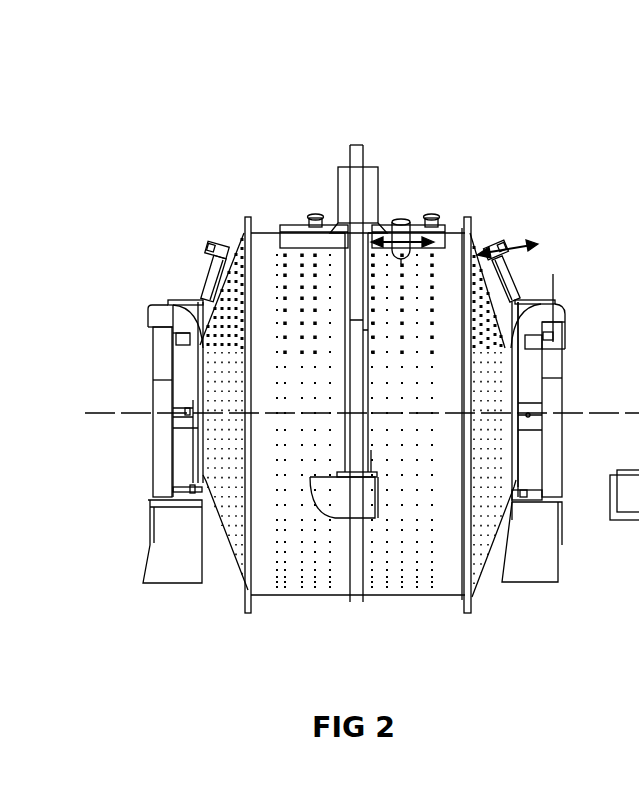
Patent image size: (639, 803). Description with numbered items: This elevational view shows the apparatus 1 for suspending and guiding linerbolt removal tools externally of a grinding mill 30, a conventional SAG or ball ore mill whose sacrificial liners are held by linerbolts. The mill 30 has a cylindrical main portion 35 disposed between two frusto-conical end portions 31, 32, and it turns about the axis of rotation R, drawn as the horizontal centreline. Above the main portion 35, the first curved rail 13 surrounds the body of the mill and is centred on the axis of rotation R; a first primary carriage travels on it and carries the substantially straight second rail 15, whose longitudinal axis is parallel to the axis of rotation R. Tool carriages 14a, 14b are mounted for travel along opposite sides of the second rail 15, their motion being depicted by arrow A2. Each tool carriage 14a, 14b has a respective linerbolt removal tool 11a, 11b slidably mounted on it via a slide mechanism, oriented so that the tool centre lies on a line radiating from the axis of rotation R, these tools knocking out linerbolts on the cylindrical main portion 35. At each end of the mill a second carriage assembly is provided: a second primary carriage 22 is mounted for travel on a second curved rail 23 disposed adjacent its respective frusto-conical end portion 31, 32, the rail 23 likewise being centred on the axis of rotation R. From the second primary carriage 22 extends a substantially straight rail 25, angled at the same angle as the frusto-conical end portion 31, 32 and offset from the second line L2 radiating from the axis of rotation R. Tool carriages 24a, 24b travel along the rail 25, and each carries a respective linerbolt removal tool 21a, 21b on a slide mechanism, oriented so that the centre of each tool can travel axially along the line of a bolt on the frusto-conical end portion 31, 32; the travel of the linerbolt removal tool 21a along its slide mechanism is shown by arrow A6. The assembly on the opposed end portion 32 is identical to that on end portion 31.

The apparatus 1 is at (203, 109).
The first curved rail 13 is at (355, 145).
The tool carriage 14a is at (435, 187).
The linerbolt removal tool 11a is at (401, 219).
The tool carriage 14b is at (298, 169).
The linerbolt removal tool 11b is at (313, 214).
The second rail 15 is at (283, 229).
The linerbolt removal tool 21a is at (205, 272).
The tool carriage 24a is at (362, 222).
The linerbolt removal tool 21b is at (170, 302).
The tool carriage 24b is at (314, 294).
The second primary carriage 22 is at (150, 316).
The second curved rail 23 is at (556, 338).
The rail 25 is at (362, 222).
The grinding mill 30 is at (358, 442).
The cylindrical main portion 35 is at (427, 588).
The frusto-conical end portion 31 is at (241, 565).
The frusto-conical end portion 32 is at (475, 562).
The arrow A2 is at (414, 229).
The arrow A6 is at (530, 245).
The second line L2 is at (553, 287).
The axis of rotation R is at (127, 413).